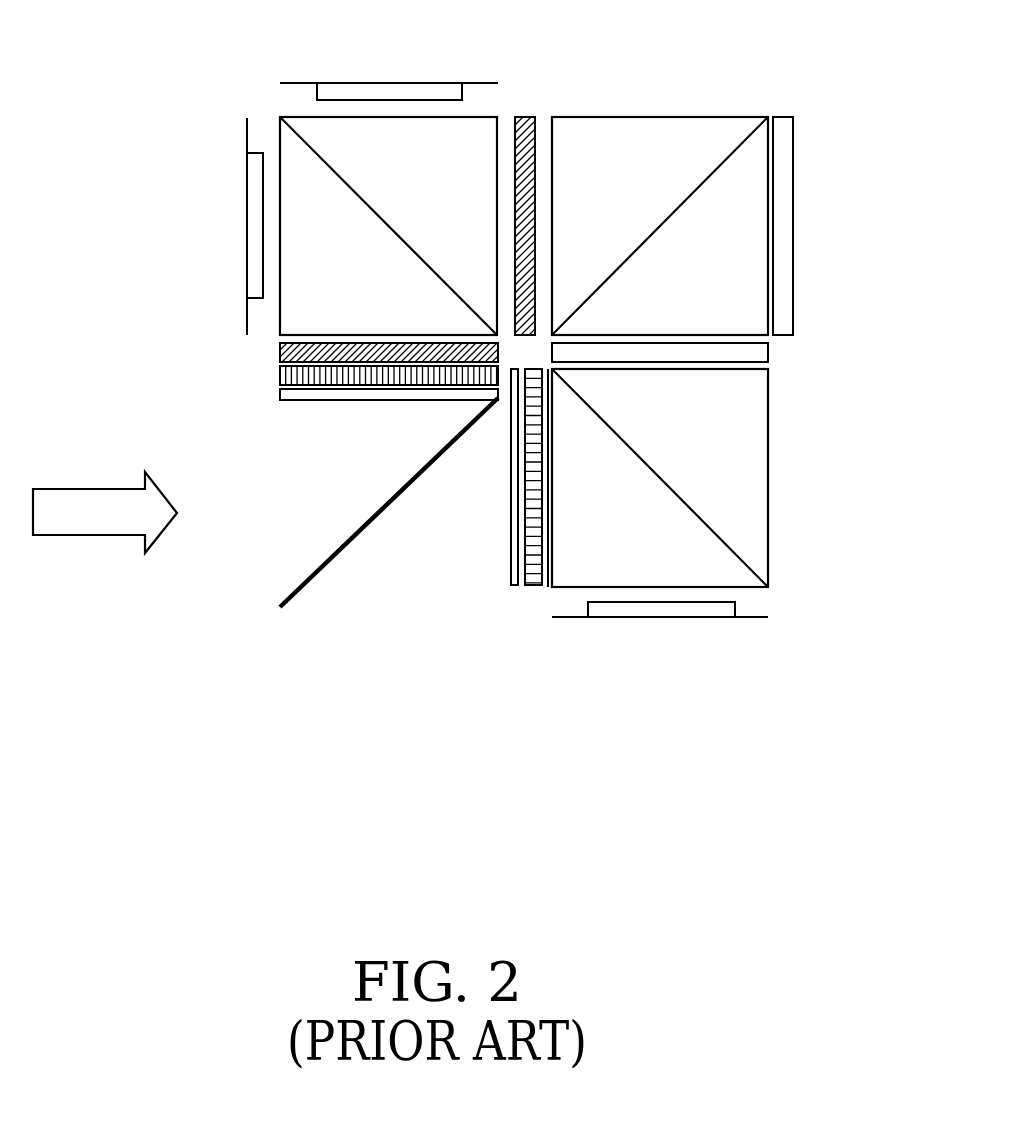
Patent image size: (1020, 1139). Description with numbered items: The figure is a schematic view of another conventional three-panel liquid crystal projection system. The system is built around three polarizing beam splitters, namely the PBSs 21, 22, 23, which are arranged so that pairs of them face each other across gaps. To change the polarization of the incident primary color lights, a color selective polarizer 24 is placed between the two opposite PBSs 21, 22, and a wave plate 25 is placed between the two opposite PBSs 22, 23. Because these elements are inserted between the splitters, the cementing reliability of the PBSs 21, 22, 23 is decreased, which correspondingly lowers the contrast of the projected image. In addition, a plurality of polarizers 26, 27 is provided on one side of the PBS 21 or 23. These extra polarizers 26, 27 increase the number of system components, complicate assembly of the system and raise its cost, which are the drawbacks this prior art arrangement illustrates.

The PBS 21 is at (280, 128).
The PBS 22 is at (723, 117).
The PBS 23 is at (770, 478).
The color selective polarizer 24 is at (527, 117).
The wave plate 25 is at (770, 352).
The polarizer 26 is at (548, 589).
The polarizer 27 is at (280, 345).